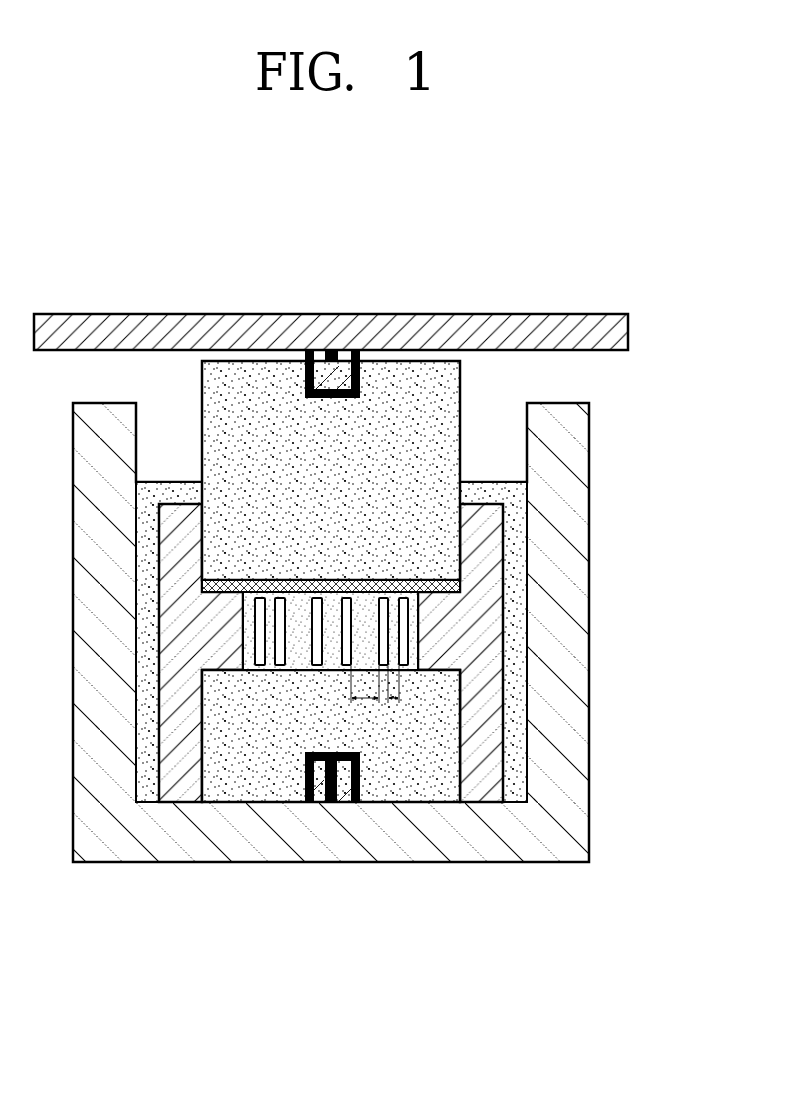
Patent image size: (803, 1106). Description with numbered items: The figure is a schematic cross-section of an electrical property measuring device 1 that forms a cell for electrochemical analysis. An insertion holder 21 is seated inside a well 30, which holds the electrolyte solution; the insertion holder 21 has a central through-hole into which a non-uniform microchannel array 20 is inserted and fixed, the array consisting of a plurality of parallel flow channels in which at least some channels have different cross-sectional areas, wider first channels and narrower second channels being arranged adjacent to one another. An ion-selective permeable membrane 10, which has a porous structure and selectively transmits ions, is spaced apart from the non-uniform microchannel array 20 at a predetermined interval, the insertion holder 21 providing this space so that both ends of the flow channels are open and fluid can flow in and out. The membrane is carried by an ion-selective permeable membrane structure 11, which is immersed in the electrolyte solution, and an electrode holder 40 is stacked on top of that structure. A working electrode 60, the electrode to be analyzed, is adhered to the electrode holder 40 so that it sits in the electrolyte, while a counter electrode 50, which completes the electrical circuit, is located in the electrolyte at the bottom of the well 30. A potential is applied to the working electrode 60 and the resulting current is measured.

The electrical property measuring device 1 is at (712, 326).
The ion-selective permeable membrane 10 is at (466, 588).
The ion-selective permeable membrane structure 11 is at (447, 447).
The non-uniform microchannel array 20 is at (420, 625).
The insertion holder 21 is at (493, 686).
The well 30 is at (563, 732).
The electrode holder 40 is at (503, 330).
The counter electrode 50 is at (360, 778).
The working electrode 60 is at (360, 377).